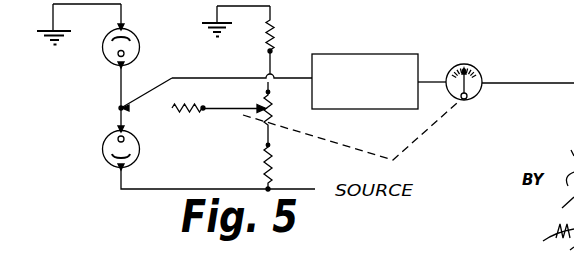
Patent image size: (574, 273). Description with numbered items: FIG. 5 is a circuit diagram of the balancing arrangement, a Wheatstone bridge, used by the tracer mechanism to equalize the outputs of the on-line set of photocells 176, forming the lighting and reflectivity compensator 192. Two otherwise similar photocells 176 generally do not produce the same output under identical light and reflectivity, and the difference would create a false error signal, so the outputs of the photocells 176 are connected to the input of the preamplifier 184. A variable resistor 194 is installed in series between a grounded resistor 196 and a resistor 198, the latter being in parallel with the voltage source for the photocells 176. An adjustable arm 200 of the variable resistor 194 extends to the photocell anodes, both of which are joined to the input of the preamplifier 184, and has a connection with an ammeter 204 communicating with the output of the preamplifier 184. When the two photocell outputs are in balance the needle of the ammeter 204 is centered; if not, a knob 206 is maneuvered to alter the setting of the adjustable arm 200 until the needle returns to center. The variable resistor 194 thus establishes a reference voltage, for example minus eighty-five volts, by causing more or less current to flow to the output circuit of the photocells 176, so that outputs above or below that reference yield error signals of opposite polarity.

The on-line set of photocells 176 is at (108, 134).
The grounded resistor 196 is at (276, 42).
The variable resistor 194 is at (203, 111).
The adjustable arm 200 is at (238, 84).
The resistor 198 is at (275, 165).
The lighting and reflectivity compensator 192 is at (334, 58).
The preamplifier 184 is at (409, 109).
The ammeter 204 is at (466, 63).
The knob 206 is at (466, 100).